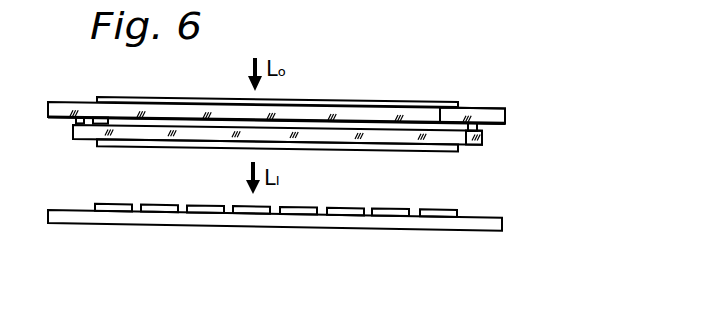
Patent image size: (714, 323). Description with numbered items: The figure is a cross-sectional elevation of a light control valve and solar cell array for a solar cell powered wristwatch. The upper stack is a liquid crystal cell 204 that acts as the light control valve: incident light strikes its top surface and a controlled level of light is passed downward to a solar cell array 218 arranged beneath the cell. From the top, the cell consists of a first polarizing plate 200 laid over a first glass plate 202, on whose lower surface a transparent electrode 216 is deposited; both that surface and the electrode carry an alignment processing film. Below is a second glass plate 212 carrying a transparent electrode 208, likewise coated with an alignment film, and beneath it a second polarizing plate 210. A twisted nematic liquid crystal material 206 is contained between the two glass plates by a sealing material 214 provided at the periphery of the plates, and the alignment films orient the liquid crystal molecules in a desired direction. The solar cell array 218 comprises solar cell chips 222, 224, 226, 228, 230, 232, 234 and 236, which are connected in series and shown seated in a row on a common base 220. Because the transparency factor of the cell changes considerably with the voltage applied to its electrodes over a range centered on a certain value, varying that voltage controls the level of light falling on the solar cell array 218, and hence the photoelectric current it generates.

The first polarizing plate 200 is at (418, 98).
The first glass plate 202 is at (492, 108).
The liquid crystal cell 204 is at (520, 115).
The twisted nematic liquid crystal material 206 is at (122, 110).
The transparent electrode 208 is at (63, 118).
The second polarizing plate 210 is at (105, 148).
The second glass plate 212 is at (437, 136).
The sealing material 214 is at (472, 148).
The transparent electrode 216 is at (494, 125).
The solar cell array 218 is at (480, 209).
The substrate 220 is at (68, 216).
The solar cell chip 222 is at (113, 210).
The solar cell chip 224 is at (162, 211).
The solar cell chip 226 is at (208, 212).
The solar cell chip 228 is at (253, 213).
The solar cell chip 230 is at (303, 214).
The solar cell chip 232 is at (347, 214).
The solar cell chip 234 is at (390, 215).
The solar cell chip 236 is at (442, 216).